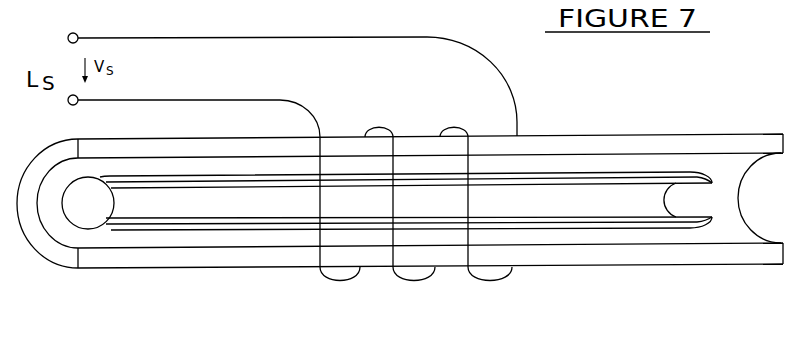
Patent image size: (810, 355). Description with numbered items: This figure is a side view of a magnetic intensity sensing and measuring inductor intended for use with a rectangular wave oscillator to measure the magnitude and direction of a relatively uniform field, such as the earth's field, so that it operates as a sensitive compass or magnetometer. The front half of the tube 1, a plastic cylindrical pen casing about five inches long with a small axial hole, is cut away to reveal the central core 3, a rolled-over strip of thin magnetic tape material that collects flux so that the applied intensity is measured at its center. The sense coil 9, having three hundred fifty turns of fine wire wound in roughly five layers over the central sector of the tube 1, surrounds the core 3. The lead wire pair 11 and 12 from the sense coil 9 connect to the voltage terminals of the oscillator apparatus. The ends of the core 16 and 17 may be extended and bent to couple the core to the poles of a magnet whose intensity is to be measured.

The tube 1 is at (598, 131).
The central core 3 is at (565, 213).
The sense coil 9 is at (415, 285).
The lead wire 11 is at (202, 32).
The lead wire 12 is at (207, 96).
The core end 16 is at (387, 200).
The core end 17 is at (680, 200).